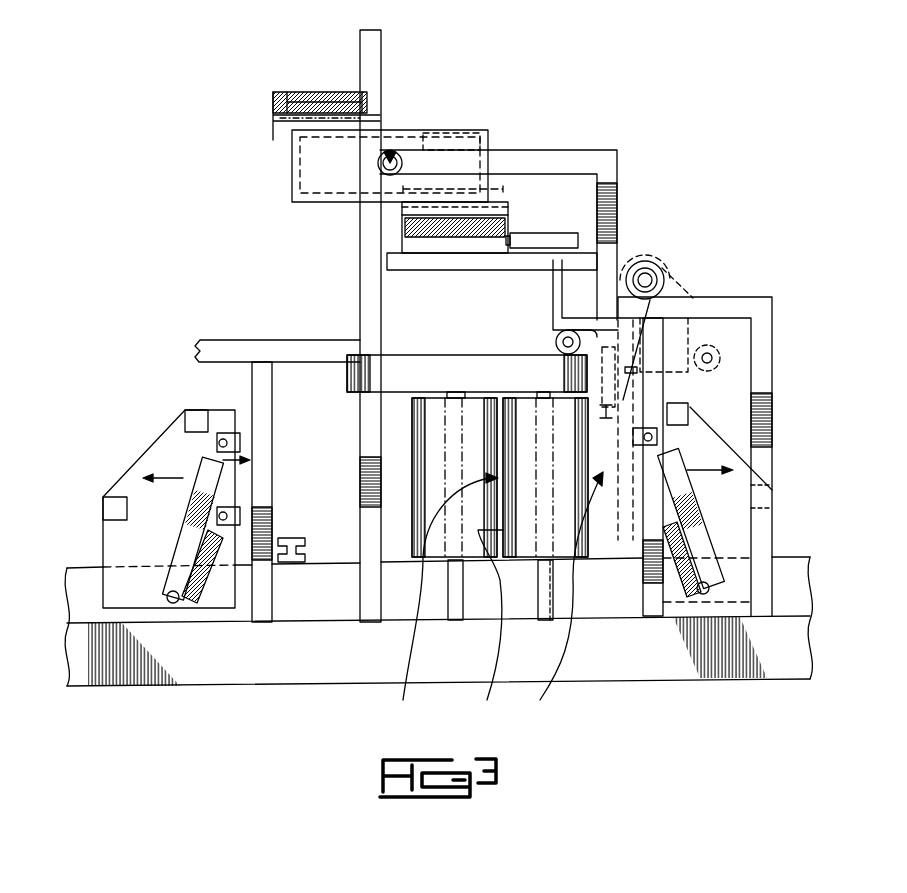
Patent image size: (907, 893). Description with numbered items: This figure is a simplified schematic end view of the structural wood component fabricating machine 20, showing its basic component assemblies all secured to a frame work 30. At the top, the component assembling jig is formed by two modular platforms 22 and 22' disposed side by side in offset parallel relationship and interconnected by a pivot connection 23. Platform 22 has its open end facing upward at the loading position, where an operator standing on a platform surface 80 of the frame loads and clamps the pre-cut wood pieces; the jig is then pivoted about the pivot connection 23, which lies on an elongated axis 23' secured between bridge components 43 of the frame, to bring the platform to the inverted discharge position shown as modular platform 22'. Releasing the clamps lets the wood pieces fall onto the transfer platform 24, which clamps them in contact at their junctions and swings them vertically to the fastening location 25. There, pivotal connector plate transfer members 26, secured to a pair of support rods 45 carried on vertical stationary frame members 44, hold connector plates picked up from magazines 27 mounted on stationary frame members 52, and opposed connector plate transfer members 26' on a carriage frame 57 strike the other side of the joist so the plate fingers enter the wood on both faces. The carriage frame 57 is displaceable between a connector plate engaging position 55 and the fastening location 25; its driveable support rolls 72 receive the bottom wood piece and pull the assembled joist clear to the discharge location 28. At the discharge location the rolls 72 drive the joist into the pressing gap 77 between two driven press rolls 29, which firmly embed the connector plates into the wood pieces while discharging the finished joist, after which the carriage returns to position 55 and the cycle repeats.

The structural wood component fabricating machine 20 is at (115, 143).
The modular platform 22 is at (278, 87).
The modular platform 22' is at (406, 224).
The pivot connection 23 is at (308, 169).
The elongated axis 23' is at (425, 114).
The transfer platform 24 is at (650, 262).
The fastening location 25 is at (560, 596).
The connector plate transfer member 26 is at (737, 404).
The connector plate transfer member 26' is at (281, 469).
The magazine 27 is at (180, 523).
The discharge location 28 is at (441, 601).
The driven press rolls 29 is at (520, 403).
The frame work 30 is at (743, 305).
The bridge component 43 is at (560, 160).
The vertical stationary frame member 44 is at (653, 583).
The support rod 45 is at (657, 428).
The stationary frame member 52 is at (763, 547).
The connector plate engaging position 55 is at (263, 352).
The carriage frame 57 is at (207, 455).
The driveable support roll 72 is at (290, 562).
The pressing gap 77 is at (484, 628).
The platform surface 80 is at (222, 348).